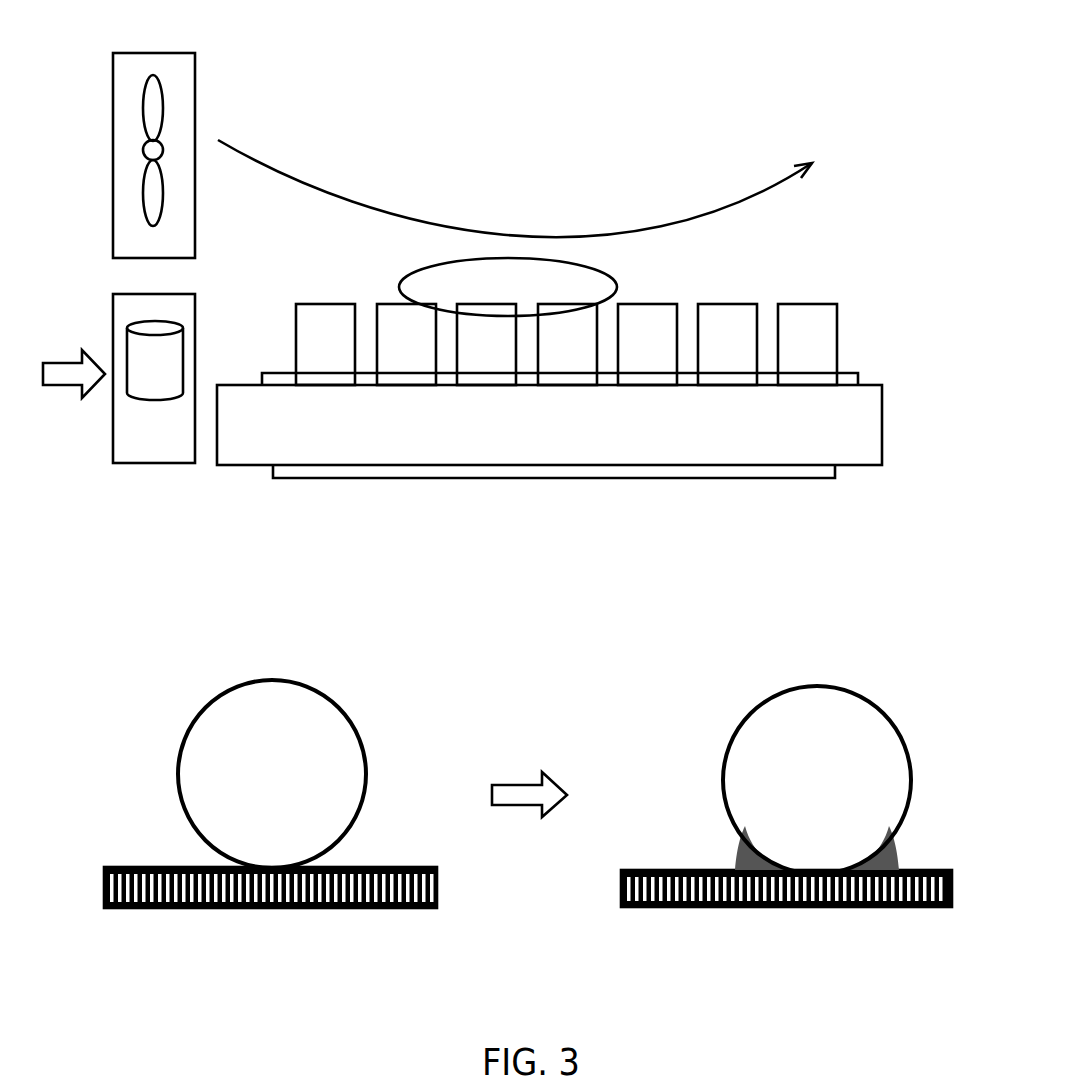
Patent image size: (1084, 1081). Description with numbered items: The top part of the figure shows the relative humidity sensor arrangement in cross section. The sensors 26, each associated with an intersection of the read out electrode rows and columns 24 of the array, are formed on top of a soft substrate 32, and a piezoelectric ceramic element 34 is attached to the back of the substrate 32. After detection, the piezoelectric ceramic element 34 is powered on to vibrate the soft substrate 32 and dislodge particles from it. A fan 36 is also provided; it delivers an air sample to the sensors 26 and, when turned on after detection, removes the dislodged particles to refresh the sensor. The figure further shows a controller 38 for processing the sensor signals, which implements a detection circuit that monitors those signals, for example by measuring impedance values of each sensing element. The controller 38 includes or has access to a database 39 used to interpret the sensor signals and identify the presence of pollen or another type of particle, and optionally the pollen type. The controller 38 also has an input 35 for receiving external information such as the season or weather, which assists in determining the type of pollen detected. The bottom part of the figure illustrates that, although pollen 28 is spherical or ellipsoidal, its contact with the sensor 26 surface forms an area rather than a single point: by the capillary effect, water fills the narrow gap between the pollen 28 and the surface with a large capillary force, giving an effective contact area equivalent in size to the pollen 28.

The columns 24 is at (690, 372).
The sensor 26 is at (840, 320).
The pollen 28 is at (398, 286).
The soft substrate 32 is at (240, 467).
The piezoelectric ceramic element 34 is at (383, 480).
The input 35 is at (63, 366).
The fan 36 is at (196, 72).
The controller 38 is at (148, 464).
The database 39 is at (173, 321).